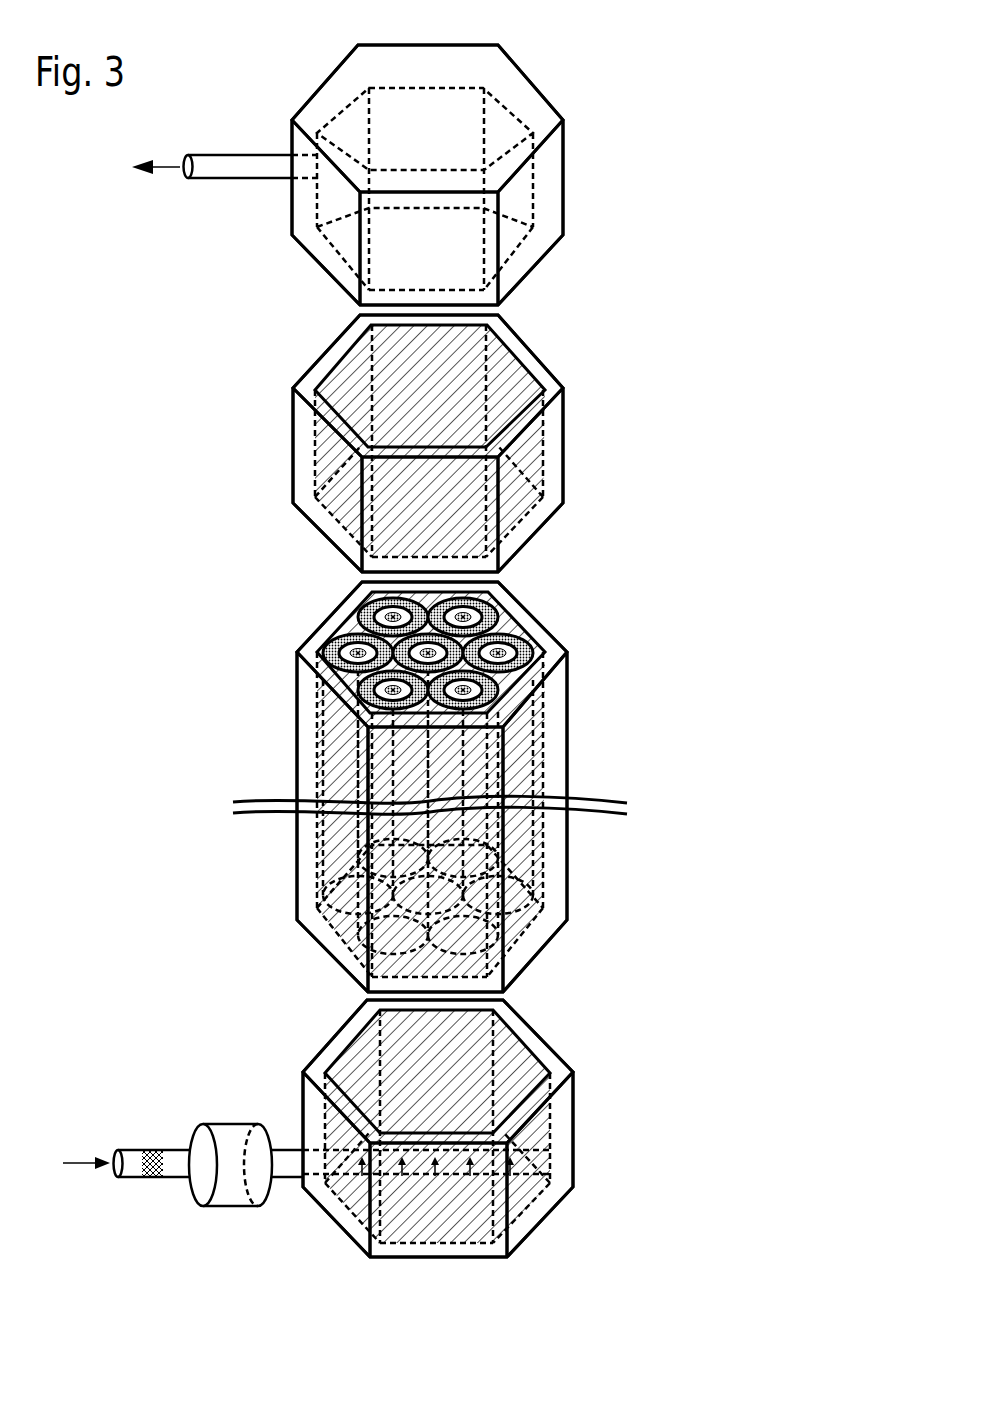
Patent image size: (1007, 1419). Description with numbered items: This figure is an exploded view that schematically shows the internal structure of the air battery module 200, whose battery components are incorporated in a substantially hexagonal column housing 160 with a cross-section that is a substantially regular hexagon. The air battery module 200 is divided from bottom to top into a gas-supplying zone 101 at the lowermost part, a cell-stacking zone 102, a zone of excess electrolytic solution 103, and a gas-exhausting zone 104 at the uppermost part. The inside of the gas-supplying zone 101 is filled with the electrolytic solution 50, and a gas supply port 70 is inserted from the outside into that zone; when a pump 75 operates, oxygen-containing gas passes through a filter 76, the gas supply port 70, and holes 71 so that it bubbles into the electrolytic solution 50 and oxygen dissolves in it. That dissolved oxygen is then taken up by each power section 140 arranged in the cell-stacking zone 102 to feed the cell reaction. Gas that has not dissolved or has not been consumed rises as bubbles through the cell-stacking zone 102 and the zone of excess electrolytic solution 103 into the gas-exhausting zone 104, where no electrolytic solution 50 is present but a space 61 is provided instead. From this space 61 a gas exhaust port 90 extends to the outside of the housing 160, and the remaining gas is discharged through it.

The air battery module 200 is at (434, 30).
The housing 160 is at (495, 83).
The gas-exhausting zone 104 is at (479, 175).
The zone of excess electrolytic solution 103 is at (597, 430).
The cell-stacking zone 102 is at (602, 785).
The gas-supplying zone 101 is at (602, 1082).
The space 61 is at (497, 163).
The electrolytic solution 50 is at (512, 357).
The power section 140 is at (502, 608).
The holes 71 is at (362, 1172).
The gas supply port 70 is at (185, 1165).
The pump 75 is at (240, 1195).
The filter 76 is at (157, 1152).
The gas exhaust port 90 is at (210, 165).